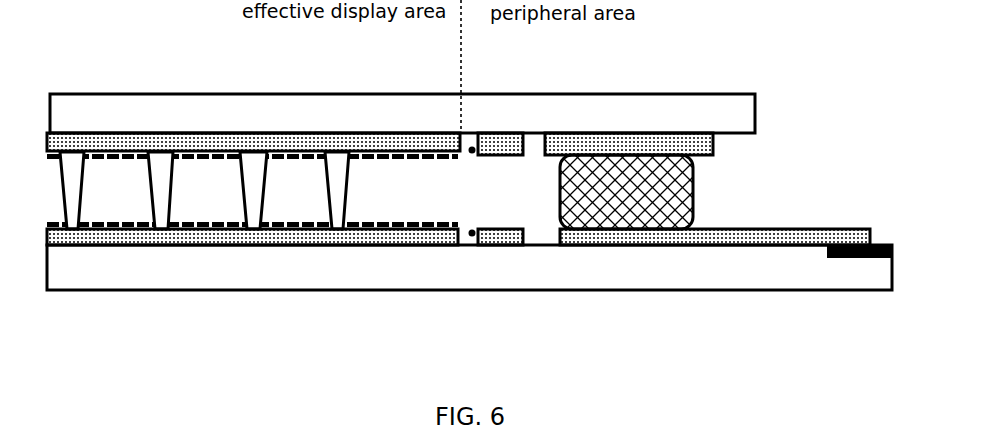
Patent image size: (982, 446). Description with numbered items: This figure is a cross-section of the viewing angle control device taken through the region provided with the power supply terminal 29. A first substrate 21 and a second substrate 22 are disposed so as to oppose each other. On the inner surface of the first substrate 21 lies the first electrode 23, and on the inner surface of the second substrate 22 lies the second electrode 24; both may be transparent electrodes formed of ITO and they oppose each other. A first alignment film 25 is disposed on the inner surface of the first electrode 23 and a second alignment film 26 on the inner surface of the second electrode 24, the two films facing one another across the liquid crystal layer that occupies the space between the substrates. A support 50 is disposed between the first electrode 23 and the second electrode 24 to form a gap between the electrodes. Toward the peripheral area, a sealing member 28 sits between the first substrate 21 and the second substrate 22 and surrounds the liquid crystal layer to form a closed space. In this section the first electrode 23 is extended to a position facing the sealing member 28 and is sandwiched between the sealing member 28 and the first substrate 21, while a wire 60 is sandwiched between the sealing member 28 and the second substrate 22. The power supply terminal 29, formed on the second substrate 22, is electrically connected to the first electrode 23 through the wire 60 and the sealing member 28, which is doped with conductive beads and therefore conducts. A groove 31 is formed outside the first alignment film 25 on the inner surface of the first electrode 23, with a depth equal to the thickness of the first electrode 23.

The first substrate 21 is at (158, 115).
The second substrate 22 is at (177, 275).
The first electrode 23 is at (168, 147).
The second electrode 24 is at (210, 237).
The first alignment film 25 is at (312, 148).
The second alignment film 26 is at (307, 227).
The sealing member 28 is at (695, 192).
The power supply terminal 29 is at (860, 257).
The groove 31 is at (472, 150).
The support 50 is at (348, 203).
The wire 60 is at (762, 229).